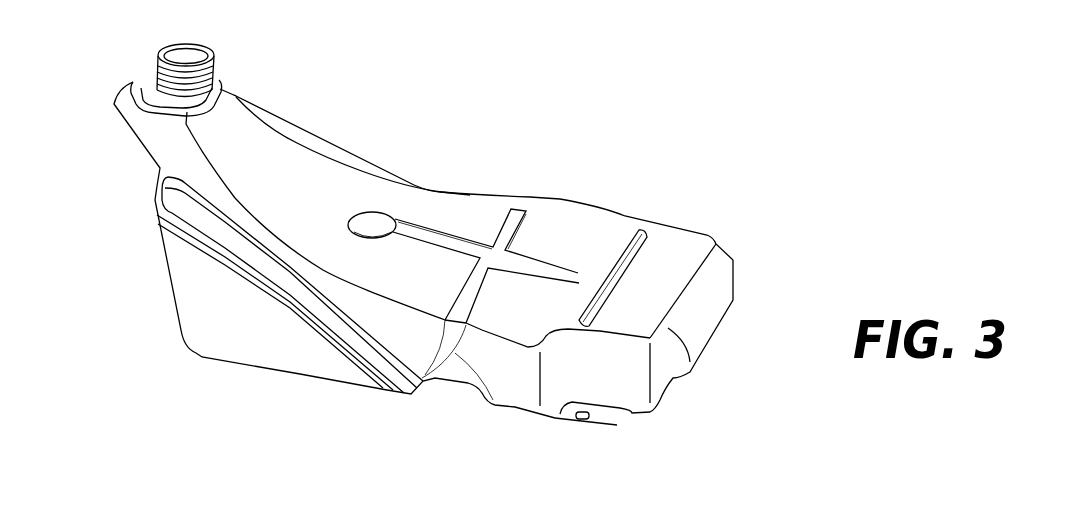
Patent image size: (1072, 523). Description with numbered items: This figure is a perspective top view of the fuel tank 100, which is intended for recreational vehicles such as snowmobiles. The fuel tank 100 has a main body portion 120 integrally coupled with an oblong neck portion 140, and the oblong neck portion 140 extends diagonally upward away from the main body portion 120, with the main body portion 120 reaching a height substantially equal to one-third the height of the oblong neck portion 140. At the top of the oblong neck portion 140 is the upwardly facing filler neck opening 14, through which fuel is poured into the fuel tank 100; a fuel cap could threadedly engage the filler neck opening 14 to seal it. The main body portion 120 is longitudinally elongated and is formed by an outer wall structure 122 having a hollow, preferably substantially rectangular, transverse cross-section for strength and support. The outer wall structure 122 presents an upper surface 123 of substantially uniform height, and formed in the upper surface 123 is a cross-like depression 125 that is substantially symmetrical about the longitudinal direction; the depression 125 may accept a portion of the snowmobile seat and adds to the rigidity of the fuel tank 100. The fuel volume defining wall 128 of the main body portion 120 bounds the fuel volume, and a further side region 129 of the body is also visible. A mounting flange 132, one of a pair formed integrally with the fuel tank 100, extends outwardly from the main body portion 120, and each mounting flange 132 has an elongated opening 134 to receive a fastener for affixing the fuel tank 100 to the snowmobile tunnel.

The filler neck opening 14 is at (219, 88).
The fuel tank 100 is at (504, 147).
The oblong neck portion 140 is at (307, 132).
The upper surface 123 is at (451, 196).
The cross-like depression 125 is at (525, 212).
The outer wall structure 122 is at (622, 216).
The main body portion 120 is at (686, 233).
The right side face 129 is at (710, 315).
The fuel volume defining wall 128 is at (652, 390).
The mounting flange 132 is at (608, 418).
The elongated opening 134 is at (585, 415).